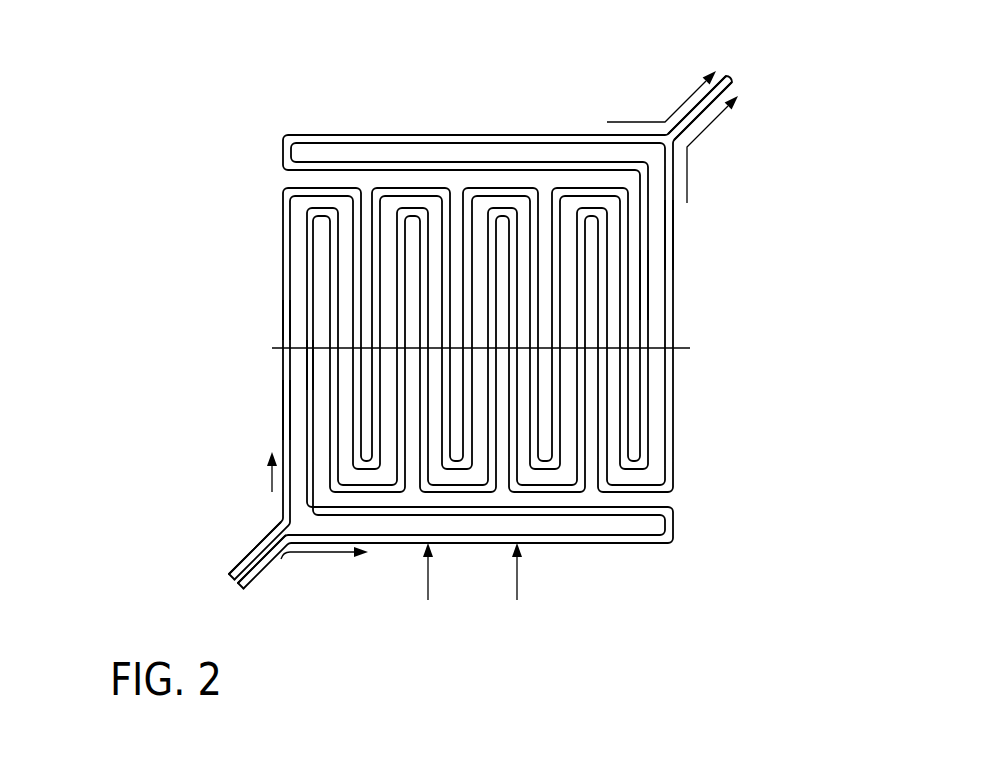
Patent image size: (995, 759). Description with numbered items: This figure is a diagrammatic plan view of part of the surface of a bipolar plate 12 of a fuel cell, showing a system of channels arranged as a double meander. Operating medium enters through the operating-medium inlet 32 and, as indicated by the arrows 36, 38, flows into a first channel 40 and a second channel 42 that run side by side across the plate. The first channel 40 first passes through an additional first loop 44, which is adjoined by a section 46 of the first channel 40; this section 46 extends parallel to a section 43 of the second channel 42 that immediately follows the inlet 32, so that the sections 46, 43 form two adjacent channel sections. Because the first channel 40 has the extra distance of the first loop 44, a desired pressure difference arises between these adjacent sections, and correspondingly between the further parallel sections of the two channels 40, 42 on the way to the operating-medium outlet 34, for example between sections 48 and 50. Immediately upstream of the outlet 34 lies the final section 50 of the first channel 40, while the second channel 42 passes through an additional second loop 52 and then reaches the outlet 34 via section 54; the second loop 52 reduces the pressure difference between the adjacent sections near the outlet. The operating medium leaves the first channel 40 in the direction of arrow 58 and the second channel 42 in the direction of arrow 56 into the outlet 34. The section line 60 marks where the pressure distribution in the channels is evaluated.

The bipolar plate 12 is at (214, 189).
The operating-medium inlet 32 is at (250, 577).
The operating-medium outlet 34 is at (726, 84).
The arrow 36 is at (286, 561).
The arrow 38 is at (244, 556).
The first channel 40 is at (428, 598).
The second channel 42 is at (265, 408).
The section of the second channel 43 is at (283, 318).
The first loop 44 is at (517, 598).
The section of the first channel 46 is at (313, 365).
The channel section 48 is at (645, 285).
The final section of the first channel 50 is at (668, 237).
The second loop 52 is at (475, 120).
The section 54 is at (553, 140).
The arrow 56 is at (673, 112).
The arrow 58 is at (707, 128).
The section line 60 is at (655, 348).